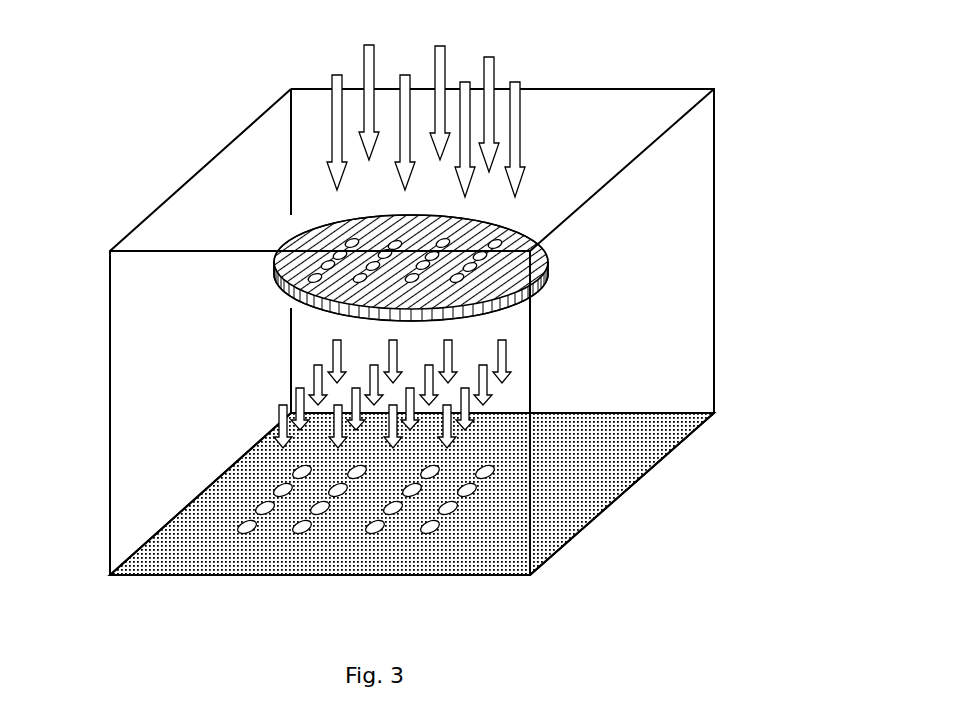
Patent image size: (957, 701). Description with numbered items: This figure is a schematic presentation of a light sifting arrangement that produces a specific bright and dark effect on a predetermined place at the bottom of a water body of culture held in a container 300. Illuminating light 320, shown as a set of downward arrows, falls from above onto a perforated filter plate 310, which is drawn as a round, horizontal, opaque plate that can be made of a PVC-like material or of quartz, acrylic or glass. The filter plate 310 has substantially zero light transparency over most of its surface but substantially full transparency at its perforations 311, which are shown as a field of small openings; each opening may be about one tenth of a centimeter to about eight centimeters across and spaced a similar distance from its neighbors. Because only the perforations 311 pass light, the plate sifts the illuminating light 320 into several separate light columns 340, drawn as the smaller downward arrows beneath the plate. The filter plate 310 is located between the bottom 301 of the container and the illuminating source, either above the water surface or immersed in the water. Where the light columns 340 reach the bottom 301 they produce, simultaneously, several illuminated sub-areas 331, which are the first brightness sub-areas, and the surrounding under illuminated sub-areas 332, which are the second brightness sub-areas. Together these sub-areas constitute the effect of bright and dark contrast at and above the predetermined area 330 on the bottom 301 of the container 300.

The container 300 is at (217, 154).
The bottom 301 is at (180, 540).
The perforated filter plate 310 is at (542, 291).
The perforations 311 is at (545, 240).
The illuminating light 320 is at (412, 65).
The predetermined area 330 is at (357, 502).
The illuminated sub-areas 331 is at (492, 470).
The under illuminated sub-areas 332 is at (385, 523).
The light columns 340 is at (493, 389).